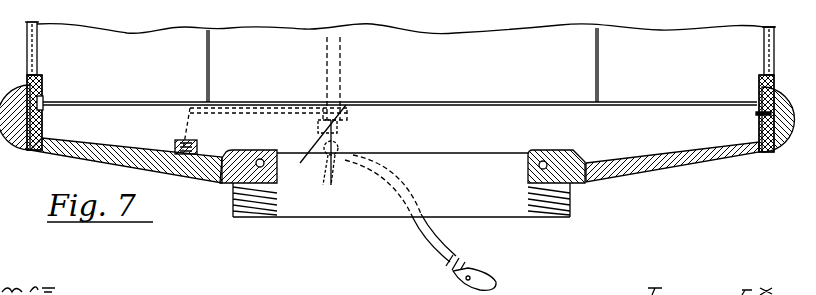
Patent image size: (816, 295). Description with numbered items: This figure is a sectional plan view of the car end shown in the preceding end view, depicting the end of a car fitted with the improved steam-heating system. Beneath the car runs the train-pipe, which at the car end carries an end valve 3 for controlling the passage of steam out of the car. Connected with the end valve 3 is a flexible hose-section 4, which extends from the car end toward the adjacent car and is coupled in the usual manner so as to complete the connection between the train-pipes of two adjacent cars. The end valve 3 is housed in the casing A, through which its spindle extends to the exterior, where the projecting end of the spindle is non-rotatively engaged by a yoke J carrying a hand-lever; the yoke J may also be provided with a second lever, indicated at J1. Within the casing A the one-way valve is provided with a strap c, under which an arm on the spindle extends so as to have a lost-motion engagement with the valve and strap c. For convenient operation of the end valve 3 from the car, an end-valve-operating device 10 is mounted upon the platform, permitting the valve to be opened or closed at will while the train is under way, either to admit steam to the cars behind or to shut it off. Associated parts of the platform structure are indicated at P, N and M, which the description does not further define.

The flexible hose-section 4 is at (428, 248).
The end-valve-operating device 10 is at (197, 149).
The clamp plate P is at (188, 130).
The panel N is at (210, 118).
The frame member M is at (270, 131).
The end valve 3 is at (318, 131).
The yoke J is at (343, 127).
The lever arm J1 is at (352, 108).
The strap c is at (337, 58).
The casing A is at (297, 183).